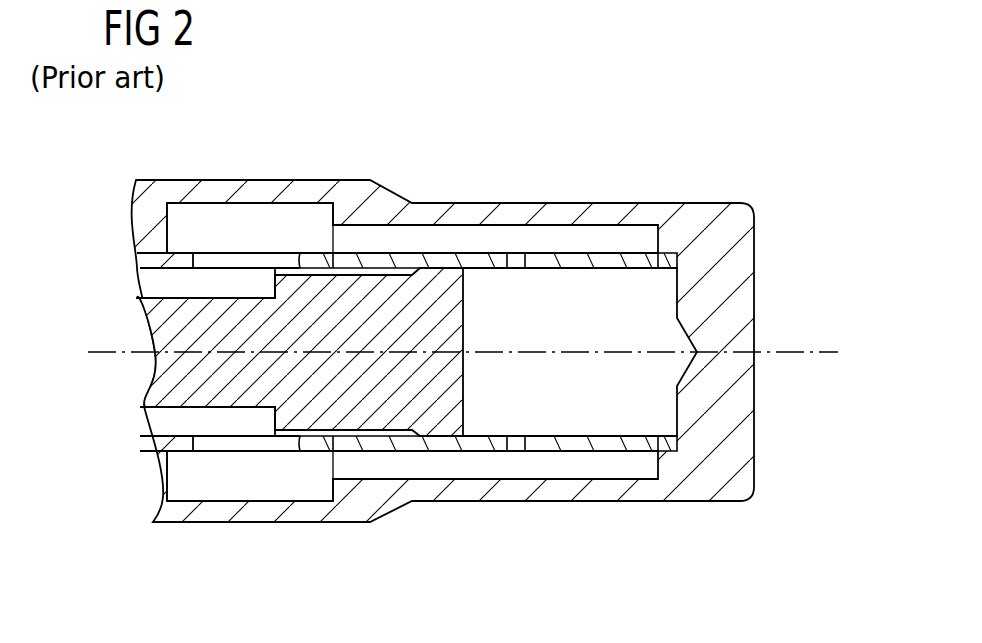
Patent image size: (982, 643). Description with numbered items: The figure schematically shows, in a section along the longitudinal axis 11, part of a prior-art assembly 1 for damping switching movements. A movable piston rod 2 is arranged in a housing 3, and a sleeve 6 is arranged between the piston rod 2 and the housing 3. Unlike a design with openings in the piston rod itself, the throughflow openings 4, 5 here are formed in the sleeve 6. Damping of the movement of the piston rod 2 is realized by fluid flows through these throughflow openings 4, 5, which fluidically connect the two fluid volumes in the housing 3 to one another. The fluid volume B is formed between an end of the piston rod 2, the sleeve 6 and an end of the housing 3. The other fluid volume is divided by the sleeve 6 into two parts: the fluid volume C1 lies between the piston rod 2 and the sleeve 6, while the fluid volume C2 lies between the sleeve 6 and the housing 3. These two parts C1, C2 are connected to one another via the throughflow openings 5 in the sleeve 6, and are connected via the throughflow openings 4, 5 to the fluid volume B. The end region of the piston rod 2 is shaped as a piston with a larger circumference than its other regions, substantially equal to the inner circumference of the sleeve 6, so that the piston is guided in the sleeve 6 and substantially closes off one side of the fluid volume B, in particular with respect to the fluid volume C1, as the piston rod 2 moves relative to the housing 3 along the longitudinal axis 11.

The assembly 1 is at (751, 130).
The piston rod 2 is at (395, 300).
The housing 3 is at (699, 203).
The throughflow openings 4 is at (665, 262).
The throughflow openings 5 is at (248, 262).
The sleeve 6 is at (432, 443).
The longitudinal axis 11 is at (828, 352).
The fluid volume B is at (593, 300).
The fluid volume C1 is at (175, 278).
The fluid volume C2 is at (208, 215).